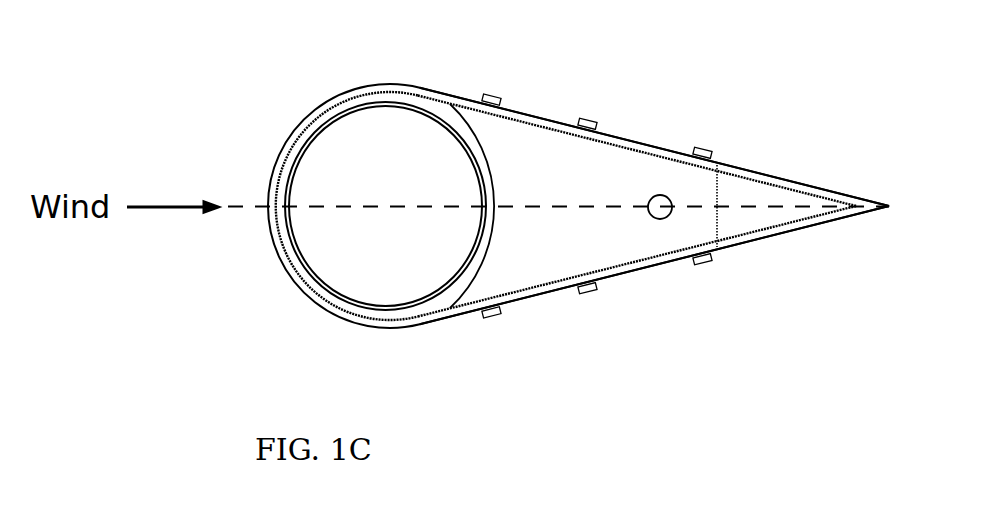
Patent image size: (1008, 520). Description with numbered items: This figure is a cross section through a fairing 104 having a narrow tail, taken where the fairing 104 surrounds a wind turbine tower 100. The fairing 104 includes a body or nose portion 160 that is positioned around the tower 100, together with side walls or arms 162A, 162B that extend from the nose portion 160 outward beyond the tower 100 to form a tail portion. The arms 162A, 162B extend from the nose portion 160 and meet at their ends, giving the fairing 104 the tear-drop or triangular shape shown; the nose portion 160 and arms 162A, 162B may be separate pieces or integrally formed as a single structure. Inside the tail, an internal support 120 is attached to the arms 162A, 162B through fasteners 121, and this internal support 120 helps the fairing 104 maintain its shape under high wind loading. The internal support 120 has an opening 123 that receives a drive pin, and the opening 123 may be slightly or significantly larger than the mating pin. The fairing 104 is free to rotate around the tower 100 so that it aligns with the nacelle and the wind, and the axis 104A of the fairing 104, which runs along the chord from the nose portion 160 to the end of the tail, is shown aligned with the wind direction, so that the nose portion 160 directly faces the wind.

The tower 100 is at (298, 281).
The fairing 104 is at (322, 89).
The axis 104A is at (578, 194).
The internal support 120 is at (710, 224).
The fasteners 121 is at (685, 130).
The opening 123 is at (683, 200).
The nose portion 160 is at (265, 150).
The arm 162A is at (732, 148).
The arm 162B is at (738, 265).